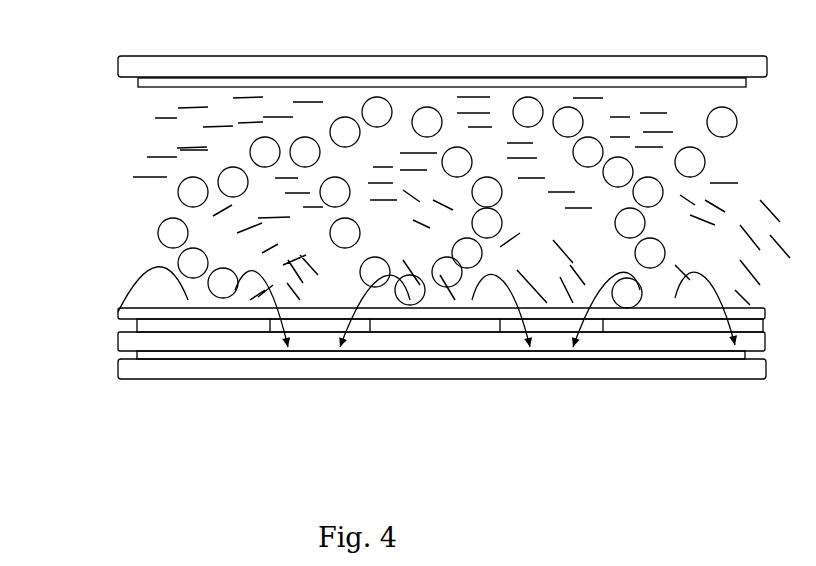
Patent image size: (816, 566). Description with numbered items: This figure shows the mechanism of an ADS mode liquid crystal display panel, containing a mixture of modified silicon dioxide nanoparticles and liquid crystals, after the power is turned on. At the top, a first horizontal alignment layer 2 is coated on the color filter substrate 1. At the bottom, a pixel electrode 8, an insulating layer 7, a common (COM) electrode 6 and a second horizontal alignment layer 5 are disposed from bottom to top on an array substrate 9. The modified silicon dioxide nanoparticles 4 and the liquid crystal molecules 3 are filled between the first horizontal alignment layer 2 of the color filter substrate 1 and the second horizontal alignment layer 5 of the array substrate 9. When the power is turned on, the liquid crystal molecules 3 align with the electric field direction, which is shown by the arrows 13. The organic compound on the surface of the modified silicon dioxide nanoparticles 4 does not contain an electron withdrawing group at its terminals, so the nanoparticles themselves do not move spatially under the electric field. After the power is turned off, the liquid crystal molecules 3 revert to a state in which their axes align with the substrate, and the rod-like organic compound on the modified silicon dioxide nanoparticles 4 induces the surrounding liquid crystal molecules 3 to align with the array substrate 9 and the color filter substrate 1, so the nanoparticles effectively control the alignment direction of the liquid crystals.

The color filter substrate 1 is at (118, 60).
The first horizontal alignment layer 2 is at (138, 82).
The liquid crystal molecules 3 is at (167, 138).
The modified silicon dioxide nanoparticles 4 is at (180, 192).
The second horizontal alignment layer 5 is at (118, 312).
The common (COM) electrode 6 is at (135, 322).
The insulating layer 7 is at (118, 340).
The pixel electrode 8 is at (212, 352).
The array substrate 9 is at (140, 368).
The arrows 13 is at (287, 320).